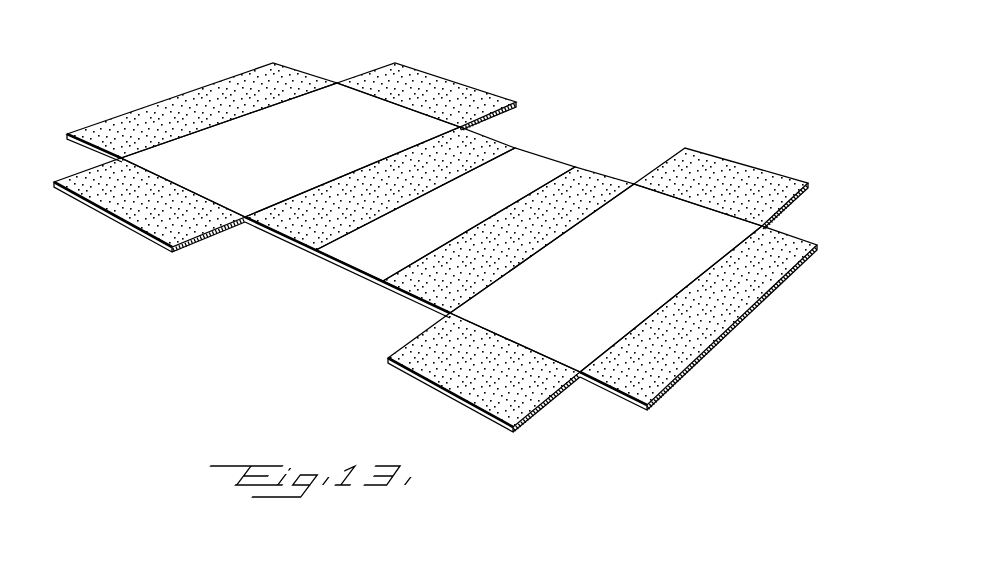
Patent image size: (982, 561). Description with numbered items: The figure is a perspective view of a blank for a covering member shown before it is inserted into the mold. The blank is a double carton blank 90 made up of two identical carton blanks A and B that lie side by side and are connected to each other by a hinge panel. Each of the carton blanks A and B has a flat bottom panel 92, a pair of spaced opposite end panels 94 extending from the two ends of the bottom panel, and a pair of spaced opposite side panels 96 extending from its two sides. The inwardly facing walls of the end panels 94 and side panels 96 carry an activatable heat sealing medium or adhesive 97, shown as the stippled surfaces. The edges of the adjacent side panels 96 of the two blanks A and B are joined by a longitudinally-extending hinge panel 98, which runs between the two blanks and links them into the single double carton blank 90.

The double carton blank 90 is at (440, 241).
The bottom panel 92 is at (271, 157).
The end panel 94 is at (363, 78).
The side panel 96 is at (163, 102).
The activatable heat sealing medium or adhesive 97 is at (227, 90).
The hinge panel 98 is at (343, 267).
The carton blank A is at (448, 80).
The carton blank B is at (733, 160).